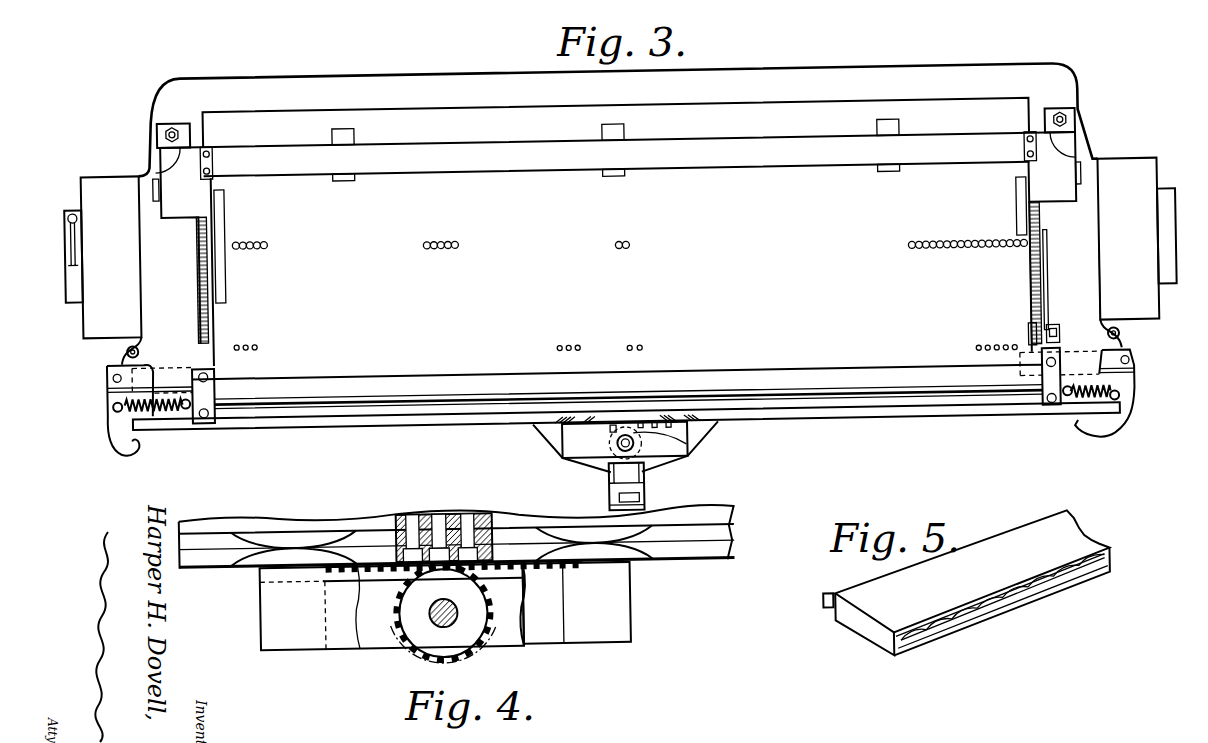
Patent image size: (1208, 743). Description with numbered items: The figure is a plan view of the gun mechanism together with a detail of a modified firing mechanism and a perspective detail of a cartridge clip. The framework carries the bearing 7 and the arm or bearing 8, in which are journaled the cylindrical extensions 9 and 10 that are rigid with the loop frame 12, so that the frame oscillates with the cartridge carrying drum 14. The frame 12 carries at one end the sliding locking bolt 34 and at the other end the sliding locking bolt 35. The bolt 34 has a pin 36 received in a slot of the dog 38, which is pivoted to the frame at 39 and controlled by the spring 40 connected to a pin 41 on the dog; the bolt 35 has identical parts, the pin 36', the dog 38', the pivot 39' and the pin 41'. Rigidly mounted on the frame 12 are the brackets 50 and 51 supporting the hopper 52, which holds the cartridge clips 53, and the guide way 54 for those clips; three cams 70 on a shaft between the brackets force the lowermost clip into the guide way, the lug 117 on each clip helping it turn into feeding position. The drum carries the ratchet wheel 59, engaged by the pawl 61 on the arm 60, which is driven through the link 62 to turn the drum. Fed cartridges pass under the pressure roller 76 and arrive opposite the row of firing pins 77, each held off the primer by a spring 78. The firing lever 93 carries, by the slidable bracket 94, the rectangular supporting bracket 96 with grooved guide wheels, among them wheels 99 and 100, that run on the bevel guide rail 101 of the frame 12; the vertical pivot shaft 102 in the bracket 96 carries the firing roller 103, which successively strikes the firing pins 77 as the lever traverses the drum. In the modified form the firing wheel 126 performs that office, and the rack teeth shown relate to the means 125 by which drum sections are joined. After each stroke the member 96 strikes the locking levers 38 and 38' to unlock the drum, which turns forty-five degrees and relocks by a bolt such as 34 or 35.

In FIG. 3, the bearing 7 is at (106, 181).
In FIG. 3, the arm or bearing 8 is at (1130, 303).
In FIG. 3, the cylindrical extension 9 is at (65, 221).
In FIG. 3, the cylindrical extension 10 is at (1165, 208).
In FIG. 3, the frame 12 is at (236, 66).
In FIG. 4, the frame 12 is at (220, 517).
In FIG. 3, the cartridge carrying drum 14 is at (805, 203).
In FIG. 3, the sliding locking bolt 34 is at (122, 440).
In FIG. 3, the sliding locking bolt 35 is at (1108, 420).
In FIG. 3, the pin 36 is at (112, 386).
In FIG. 3, the pin 36' is at (1139, 368).
In FIG. 3, the dog 38 is at (127, 386).
In FIG. 3, the dog 38' is at (1139, 379).
In FIG. 3, the pivot 39 is at (115, 347).
In FIG. 3, the pivot 39' is at (1139, 335).
In FIG. 3, the spring 40 is at (143, 385).
In FIG. 3, the pin 41 is at (129, 406).
In FIG. 3, the pin 41' is at (1119, 397).
In FIG. 3, the bracket 50 is at (1055, 188).
In FIG. 3, the bracket 51 is at (180, 205).
In FIG. 3, the hopper 52 is at (756, 167).
In FIG. 5, the cartridge clip 53 is at (1007, 541).
In FIG. 3, the guide way 54 is at (222, 226).
In FIG. 3, the ratchet wheel 59 is at (1038, 252).
In FIG. 3, the arm 60 is at (1045, 307).
In FIG. 3, the pawl 61 is at (1033, 336).
In FIG. 3, the link 62 is at (1052, 332).
In FIG. 3, the cam 70 is at (350, 128).
In FIG. 3, the pressure roller 76 is at (383, 381).
In FIG. 4, the firing pin 77 is at (452, 516).
In FIG. 4, the spring 78 is at (413, 516).
In FIG. 3, the firing lever 93 is at (635, 487).
In FIG. 3, the bracket 94 is at (606, 488).
In FIG. 3, the rectangular supporting bracket 96 is at (585, 443).
In FIG. 4, the rectangular supporting bracket 96 is at (305, 630).
In FIG. 3, the guide wheel 99 is at (548, 419).
In FIG. 4, the guide wheel 99 is at (290, 534).
In FIG. 3, the guide wheel 100 is at (688, 426).
In FIG. 4, the guide wheel 100 is at (608, 553).
In FIG. 3, the bevel guide rail 101 is at (270, 422).
In FIG. 4, the bevel guide rail 101 is at (216, 553).
In FIG. 3, the vertical pivot shaft 102 is at (640, 446).
In FIG. 3, the firing roller 103 is at (670, 428).
In FIG. 5, the lug 117 is at (826, 606).
In FIG. 4, the means 125 is at (533, 572).
In FIG. 4, the modified firing wheel 126 is at (470, 630).